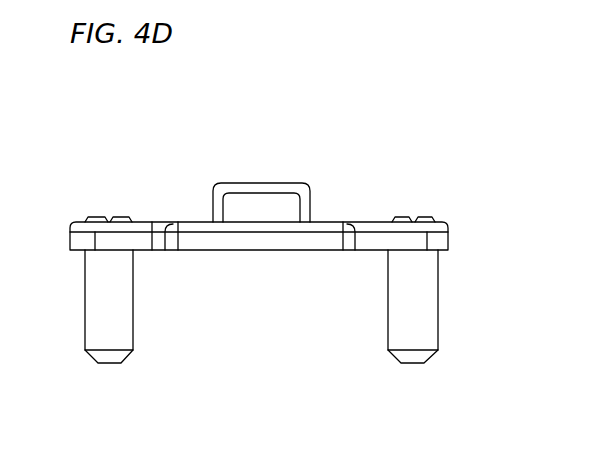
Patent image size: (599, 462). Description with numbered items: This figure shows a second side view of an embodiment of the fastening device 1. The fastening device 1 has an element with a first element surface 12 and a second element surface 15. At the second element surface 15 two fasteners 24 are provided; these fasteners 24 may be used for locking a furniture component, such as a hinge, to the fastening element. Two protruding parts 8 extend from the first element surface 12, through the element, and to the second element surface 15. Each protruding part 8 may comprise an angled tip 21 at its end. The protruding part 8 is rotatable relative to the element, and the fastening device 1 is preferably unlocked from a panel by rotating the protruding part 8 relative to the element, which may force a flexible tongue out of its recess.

The fastening device 1 is at (362, 132).
The protruding part 8 is at (98, 302).
The first element surface 12 is at (280, 252).
The second element surface 15 is at (150, 220).
The angled tip 21 is at (432, 357).
The fastener 24 is at (247, 188).